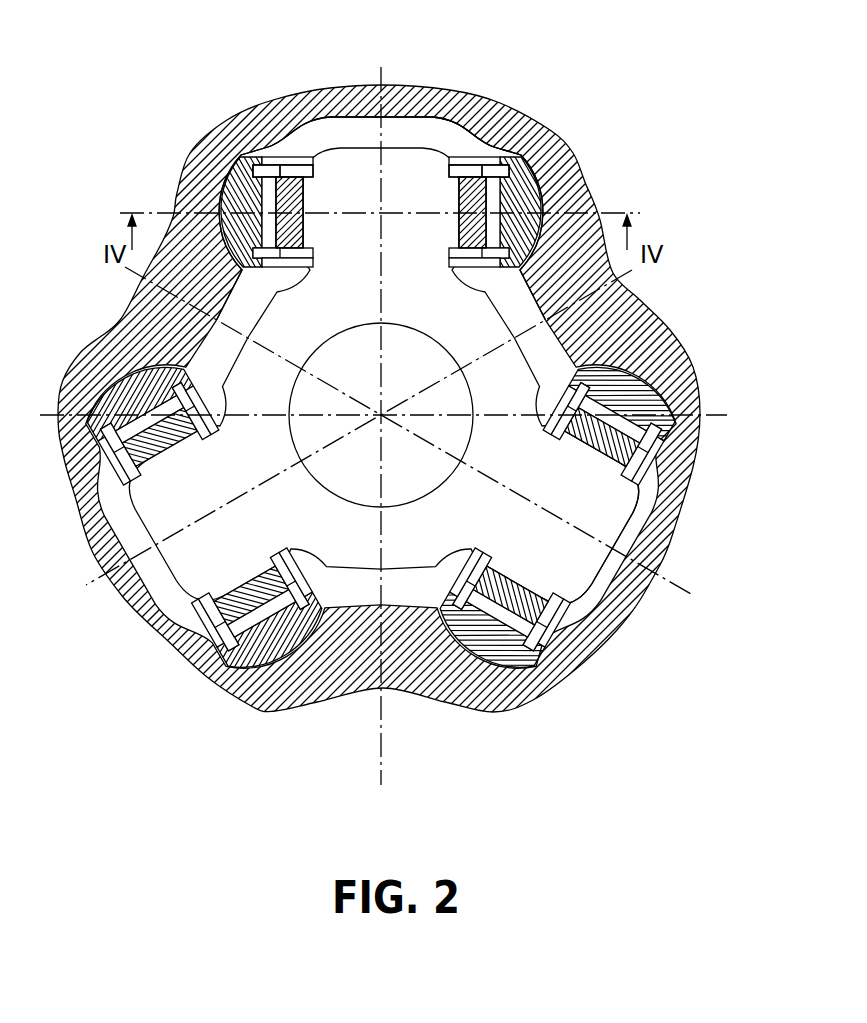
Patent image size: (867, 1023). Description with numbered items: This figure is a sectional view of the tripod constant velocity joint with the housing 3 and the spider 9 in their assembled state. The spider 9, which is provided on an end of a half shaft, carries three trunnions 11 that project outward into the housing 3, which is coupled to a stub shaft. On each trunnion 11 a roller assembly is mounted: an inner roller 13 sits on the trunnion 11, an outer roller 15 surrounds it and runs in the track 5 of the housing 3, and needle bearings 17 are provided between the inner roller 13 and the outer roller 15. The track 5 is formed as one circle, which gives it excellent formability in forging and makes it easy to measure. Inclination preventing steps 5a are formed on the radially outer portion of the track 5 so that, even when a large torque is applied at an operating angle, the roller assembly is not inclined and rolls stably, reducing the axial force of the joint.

The housing 3 is at (507, 110).
The track 5 is at (353, 128).
The inclination preventing steps 5a is at (452, 141).
The spider 9 is at (560, 338).
The trunnion 11 is at (637, 528).
The inner roller 13 is at (297, 173).
The outer roller 15 is at (226, 172).
The needle bearings 17 is at (507, 193).